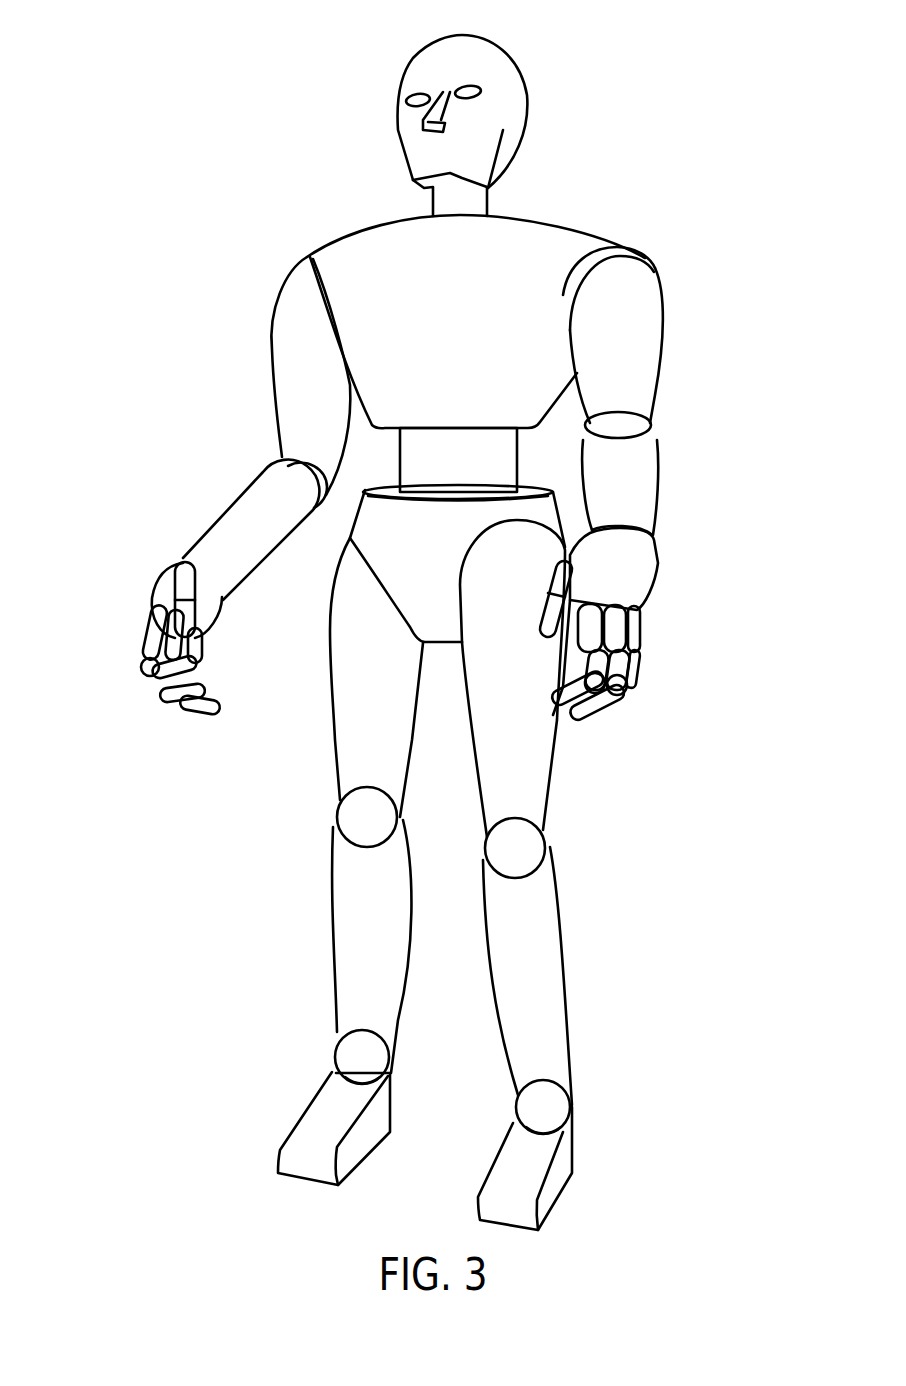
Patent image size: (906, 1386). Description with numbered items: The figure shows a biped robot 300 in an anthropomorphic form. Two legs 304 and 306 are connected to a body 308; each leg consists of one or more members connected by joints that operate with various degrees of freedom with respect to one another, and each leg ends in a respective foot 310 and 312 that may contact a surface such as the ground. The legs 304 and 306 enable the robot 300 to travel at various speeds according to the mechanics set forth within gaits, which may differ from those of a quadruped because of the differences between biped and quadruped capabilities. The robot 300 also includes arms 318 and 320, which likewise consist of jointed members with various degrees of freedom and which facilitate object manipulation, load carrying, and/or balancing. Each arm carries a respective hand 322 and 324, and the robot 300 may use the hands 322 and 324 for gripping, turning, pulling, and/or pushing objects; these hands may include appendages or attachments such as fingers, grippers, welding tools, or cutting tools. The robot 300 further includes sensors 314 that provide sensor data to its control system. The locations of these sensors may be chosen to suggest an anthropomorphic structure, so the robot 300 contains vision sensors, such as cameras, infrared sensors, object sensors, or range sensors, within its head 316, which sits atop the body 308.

The robot 300 is at (690, 151).
The leg 304 is at (575, 905).
The leg 306 is at (301, 885).
The body 308 is at (325, 529).
The foot 310 is at (575, 1157).
The foot 312 is at (308, 1098).
The sensor 314 is at (418, 96).
The head 316 is at (517, 41).
The arm 318 is at (694, 490).
The arm 320 is at (187, 510).
The hand 322 is at (660, 590).
The hand 324 is at (150, 597).